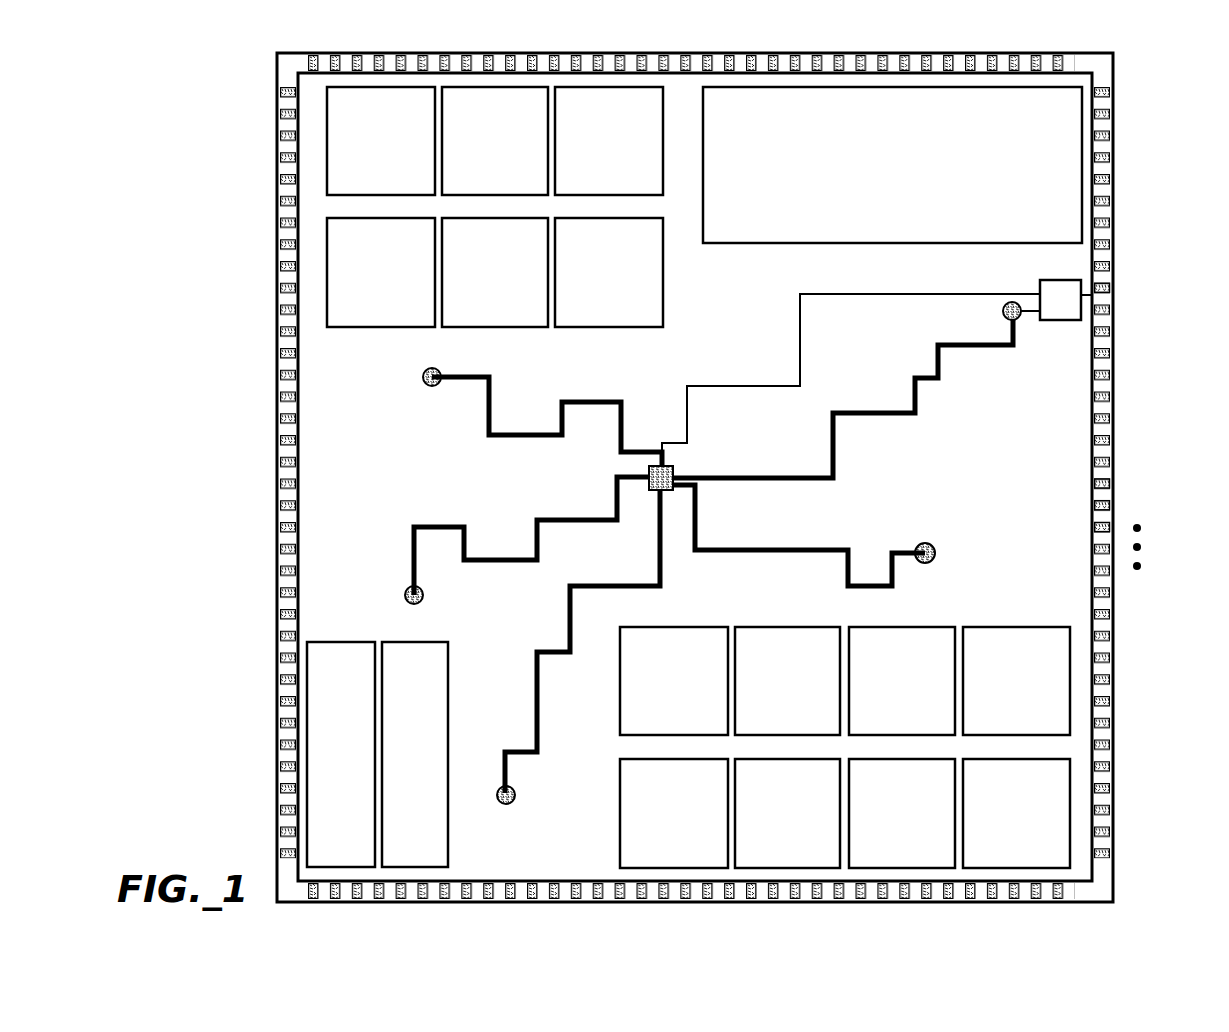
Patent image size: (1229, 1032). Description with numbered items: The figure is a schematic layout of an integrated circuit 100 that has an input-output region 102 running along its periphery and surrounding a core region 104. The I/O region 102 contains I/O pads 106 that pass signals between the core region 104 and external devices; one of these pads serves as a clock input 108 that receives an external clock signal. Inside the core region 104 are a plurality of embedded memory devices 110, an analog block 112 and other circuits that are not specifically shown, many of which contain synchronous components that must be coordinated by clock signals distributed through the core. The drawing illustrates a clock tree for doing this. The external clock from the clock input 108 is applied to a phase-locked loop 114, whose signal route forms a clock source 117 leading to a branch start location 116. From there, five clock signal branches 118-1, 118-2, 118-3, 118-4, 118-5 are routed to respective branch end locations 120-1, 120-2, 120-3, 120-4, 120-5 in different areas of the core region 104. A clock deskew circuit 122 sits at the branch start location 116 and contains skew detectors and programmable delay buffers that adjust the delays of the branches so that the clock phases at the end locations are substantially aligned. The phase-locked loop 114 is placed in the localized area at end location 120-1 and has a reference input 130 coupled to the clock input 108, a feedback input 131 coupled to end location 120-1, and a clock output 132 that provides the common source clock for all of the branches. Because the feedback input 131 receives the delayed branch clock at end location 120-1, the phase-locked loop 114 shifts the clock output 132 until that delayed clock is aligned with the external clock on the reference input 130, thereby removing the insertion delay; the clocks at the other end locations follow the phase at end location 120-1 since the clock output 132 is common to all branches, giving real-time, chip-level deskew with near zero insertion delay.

The integrated circuit 100 is at (1140, 121).
The input-output (I/O) region 102 is at (274, 367).
The core region 104 is at (390, 434).
The I/O pads 106 is at (1113, 527).
The clock input 108 is at (1115, 284).
The embedded memory devices 110 is at (452, 327).
The analog block 112 is at (790, 243).
The phase-locked loop (PLL) 114 is at (1073, 322).
The branch start location 116 is at (654, 428).
The clock source 117 is at (713, 386).
The clock signal branch 118-1 is at (908, 412).
The clock signal branch 118-2 is at (517, 433).
The clock signal branch 118-3 is at (496, 558).
The clock signal branch 118-4 is at (664, 553).
The clock signal branch 118-5 is at (770, 545).
The branch end location 120-1 is at (1003, 313).
The branch end location 120-2 is at (425, 382).
The branch end location 120-3 is at (406, 602).
The branch end location 120-4 is at (507, 805).
The branch end location 120-5 is at (924, 543).
The clock deskew circuit 122 is at (675, 466).
The reference input 130 is at (1086, 297).
The feedback input 131 is at (1032, 313).
The clock output 132 is at (950, 294).